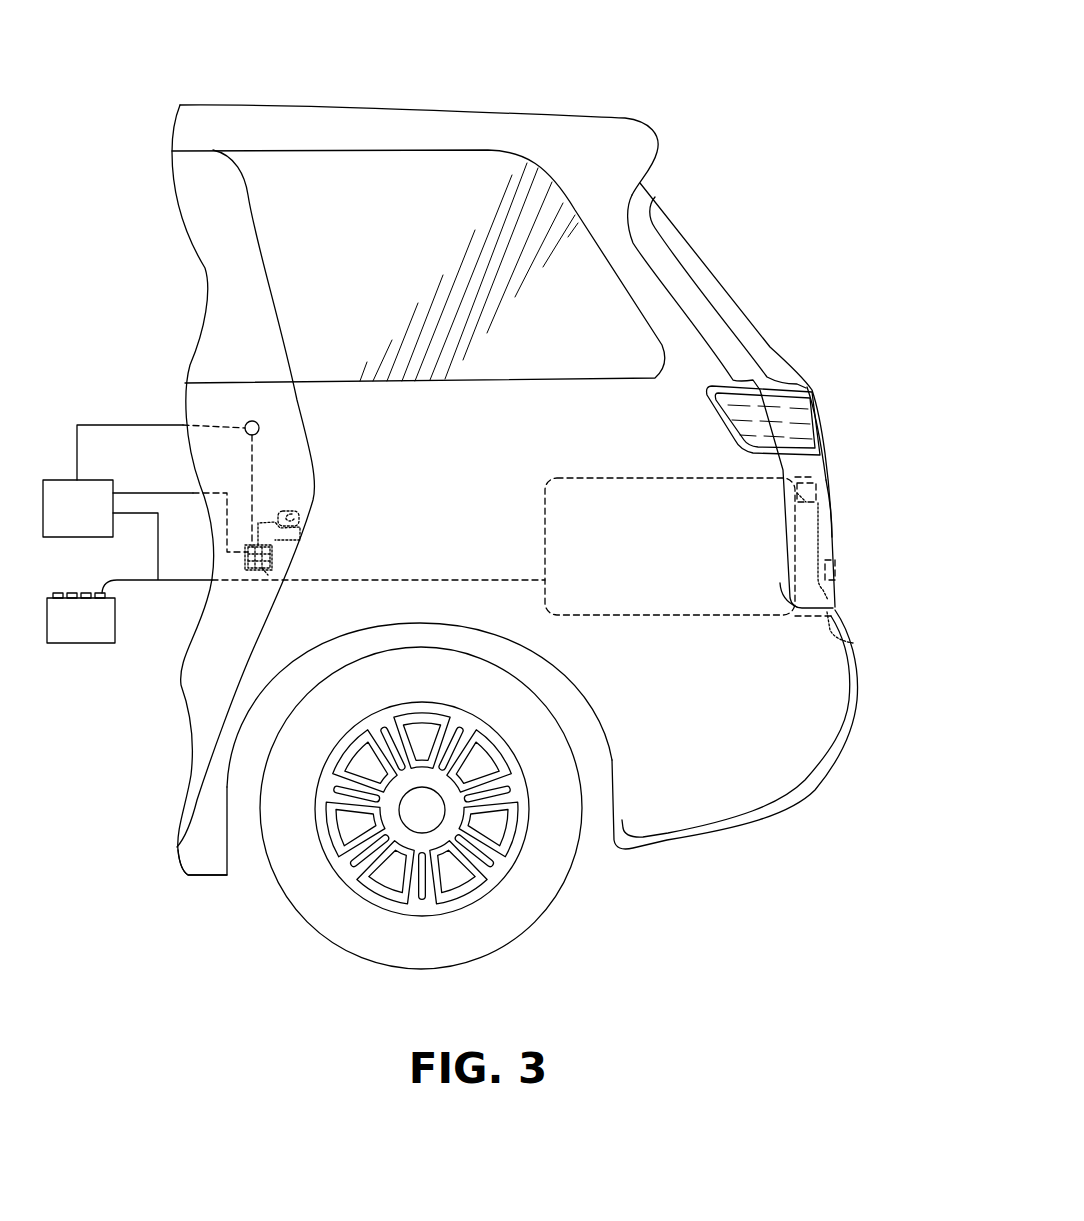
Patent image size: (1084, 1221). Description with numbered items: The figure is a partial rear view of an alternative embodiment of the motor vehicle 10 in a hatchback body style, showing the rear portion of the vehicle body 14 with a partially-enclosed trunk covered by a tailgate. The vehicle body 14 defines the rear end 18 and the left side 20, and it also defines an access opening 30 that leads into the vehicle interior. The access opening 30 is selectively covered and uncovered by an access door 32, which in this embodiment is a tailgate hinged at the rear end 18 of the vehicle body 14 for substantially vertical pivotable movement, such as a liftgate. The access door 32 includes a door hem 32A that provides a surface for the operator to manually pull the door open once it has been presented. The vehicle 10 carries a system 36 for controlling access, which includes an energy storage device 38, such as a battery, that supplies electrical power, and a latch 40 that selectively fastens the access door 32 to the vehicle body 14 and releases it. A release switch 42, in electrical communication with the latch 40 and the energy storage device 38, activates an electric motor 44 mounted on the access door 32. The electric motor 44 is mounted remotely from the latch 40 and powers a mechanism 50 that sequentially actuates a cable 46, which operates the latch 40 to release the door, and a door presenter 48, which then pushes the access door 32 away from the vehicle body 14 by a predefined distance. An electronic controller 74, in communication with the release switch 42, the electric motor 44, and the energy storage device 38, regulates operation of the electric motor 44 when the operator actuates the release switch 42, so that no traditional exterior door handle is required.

The motor vehicle 10 is at (613, 97).
The vehicle body 14 is at (636, 278).
The rear end 18 is at (765, 319).
The left side 20 is at (207, 853).
The access opening 30 is at (227, 250).
The access door 32 is at (833, 537).
The door hem 32A is at (813, 617).
The system for controlling access 36 is at (522, 499).
The energy storage device 38 is at (69, 632).
The latch 40 is at (300, 523).
The release switch 42 is at (250, 420).
The electric motor 44 is at (247, 562).
The cable 46 is at (300, 540).
The door presenter 48 is at (263, 567).
The mechanism 50 is at (270, 552).
The electronic controller 74 is at (66, 517).